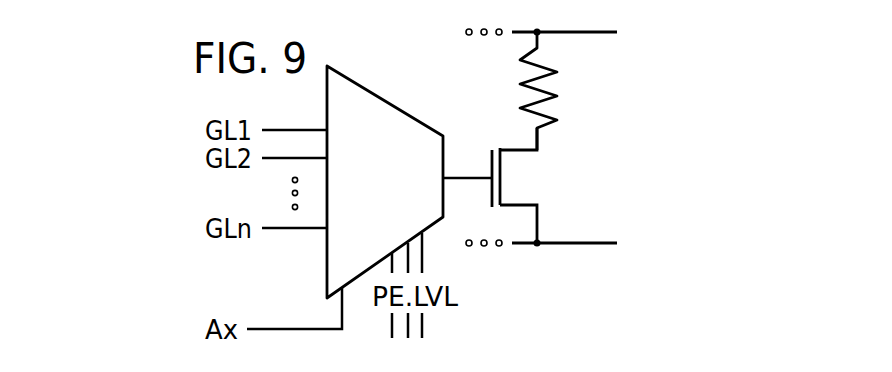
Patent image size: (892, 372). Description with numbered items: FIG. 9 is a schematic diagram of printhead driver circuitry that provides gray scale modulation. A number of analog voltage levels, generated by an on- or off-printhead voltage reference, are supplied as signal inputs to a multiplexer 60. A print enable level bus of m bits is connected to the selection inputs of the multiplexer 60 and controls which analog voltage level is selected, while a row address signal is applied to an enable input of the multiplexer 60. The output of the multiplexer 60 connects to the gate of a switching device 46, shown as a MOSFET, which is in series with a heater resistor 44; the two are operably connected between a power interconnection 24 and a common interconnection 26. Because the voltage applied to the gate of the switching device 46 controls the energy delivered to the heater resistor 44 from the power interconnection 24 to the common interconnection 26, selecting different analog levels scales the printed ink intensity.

The multiplexer 60 is at (403, 110).
The power interconnection 24 is at (600, 32).
The heater resistor 44 is at (540, 47).
The switching device 46 is at (507, 173).
The common interconnection 26 is at (558, 243).